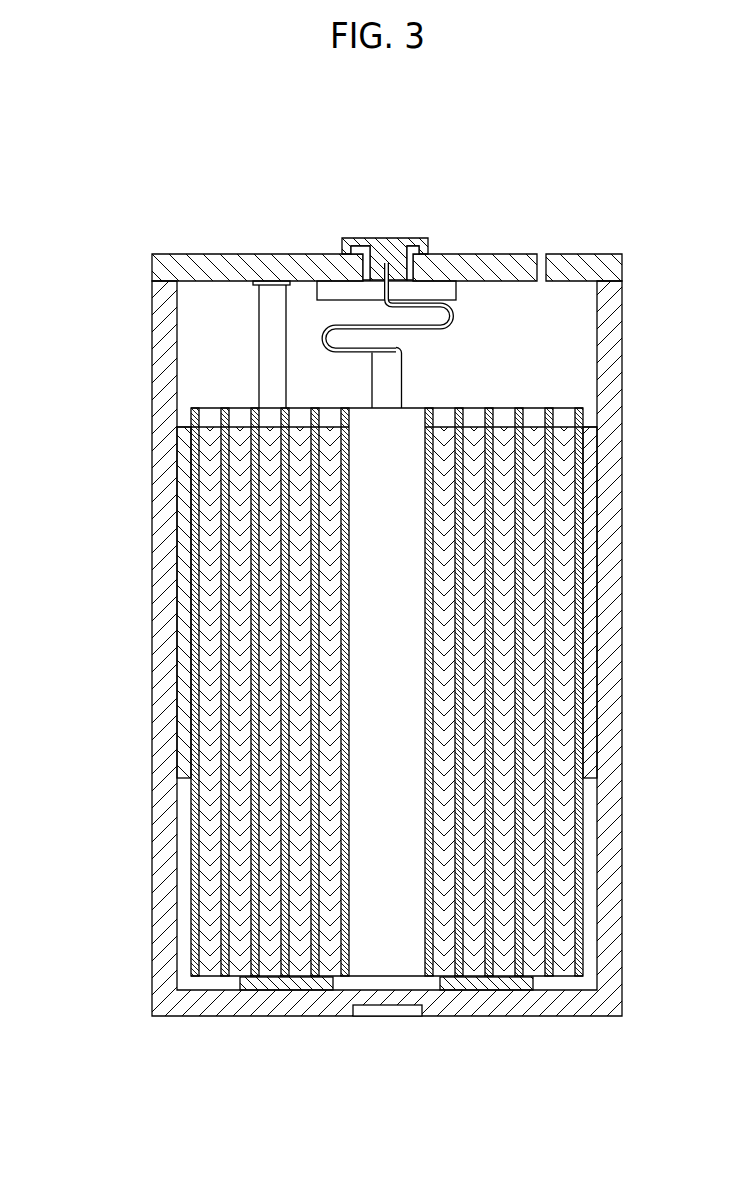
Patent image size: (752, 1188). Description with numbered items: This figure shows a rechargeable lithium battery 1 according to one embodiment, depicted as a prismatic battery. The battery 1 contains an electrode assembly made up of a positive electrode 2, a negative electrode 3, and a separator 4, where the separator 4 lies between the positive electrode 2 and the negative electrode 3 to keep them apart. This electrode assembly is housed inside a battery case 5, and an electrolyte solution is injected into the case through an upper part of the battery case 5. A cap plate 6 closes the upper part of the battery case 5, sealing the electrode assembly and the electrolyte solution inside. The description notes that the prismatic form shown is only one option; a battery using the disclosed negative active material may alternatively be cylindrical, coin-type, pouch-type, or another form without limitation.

The rechargeable lithium battery 1 is at (534, 195).
The positive electrode 2 is at (565, 821).
The negative electrode 3 is at (242, 832).
The separator 4 is at (223, 943).
The battery case 5 is at (165, 332).
The cap plate 6 is at (347, 237).